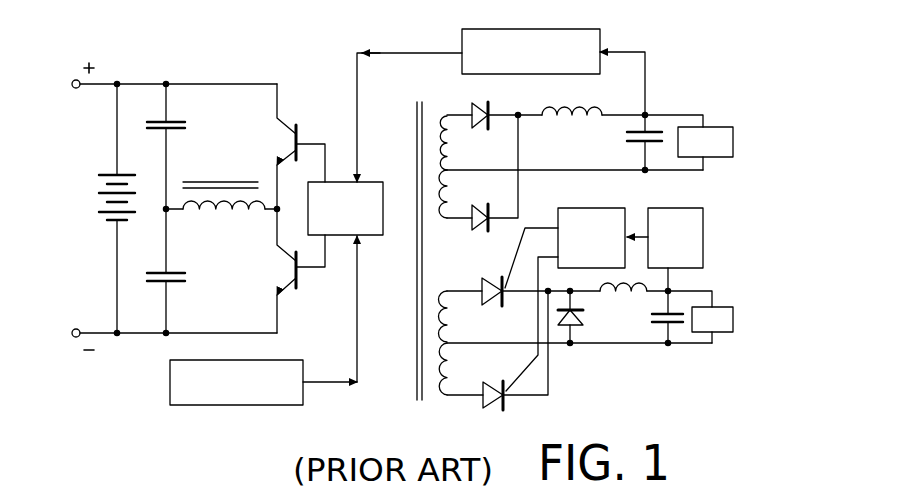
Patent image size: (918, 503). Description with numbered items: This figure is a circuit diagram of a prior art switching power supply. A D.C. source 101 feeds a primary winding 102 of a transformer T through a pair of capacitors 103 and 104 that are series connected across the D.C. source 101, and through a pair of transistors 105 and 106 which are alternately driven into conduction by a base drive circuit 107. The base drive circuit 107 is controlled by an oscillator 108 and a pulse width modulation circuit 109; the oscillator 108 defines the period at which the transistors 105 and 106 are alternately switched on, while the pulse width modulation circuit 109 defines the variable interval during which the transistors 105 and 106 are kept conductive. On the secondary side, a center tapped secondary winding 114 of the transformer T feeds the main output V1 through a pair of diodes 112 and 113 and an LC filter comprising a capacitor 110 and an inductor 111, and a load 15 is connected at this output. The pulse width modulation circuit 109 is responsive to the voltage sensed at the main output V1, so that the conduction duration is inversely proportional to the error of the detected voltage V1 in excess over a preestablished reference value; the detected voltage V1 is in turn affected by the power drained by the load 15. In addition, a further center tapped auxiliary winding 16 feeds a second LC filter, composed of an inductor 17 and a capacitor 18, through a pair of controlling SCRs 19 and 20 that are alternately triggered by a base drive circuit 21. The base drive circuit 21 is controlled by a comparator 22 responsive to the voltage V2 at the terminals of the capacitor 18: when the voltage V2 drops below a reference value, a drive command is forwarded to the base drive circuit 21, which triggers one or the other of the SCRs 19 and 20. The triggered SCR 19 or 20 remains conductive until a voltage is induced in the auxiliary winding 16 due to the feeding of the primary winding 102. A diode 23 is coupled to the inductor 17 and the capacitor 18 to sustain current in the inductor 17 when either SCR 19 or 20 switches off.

The D.C. source 101 is at (106, 222).
The primary winding 102 is at (243, 221).
The capacitor 103 is at (176, 121).
The capacitor 104 is at (175, 282).
The transistor 105 is at (300, 131).
The transistor 106 is at (300, 290).
The base drive circuit 107 is at (372, 182).
The oscillator 108 is at (305, 392).
The pulse width modulation circuit 109 is at (603, 38).
The capacitor 110 is at (637, 143).
The inductor 111 is at (582, 126).
The diode 112 is at (472, 104).
The diode 113 is at (471, 233).
The center tapped secondary winding 114 is at (450, 150).
The transformer T is at (417, 286).
The load 15 is at (706, 126).
The main output V1 is at (665, 93).
The center tapped auxiliary winding 16 is at (455, 328).
The inductor 17 is at (622, 299).
The capacitor 18 is at (657, 323).
The SCR 19 is at (490, 278).
The SCR 20 is at (485, 403).
The base drive circuit 21 is at (603, 208).
The comparator 22 is at (678, 208).
The diode 23 is at (577, 326).
The voltage at capacitor 18 terminals V2 is at (672, 290).